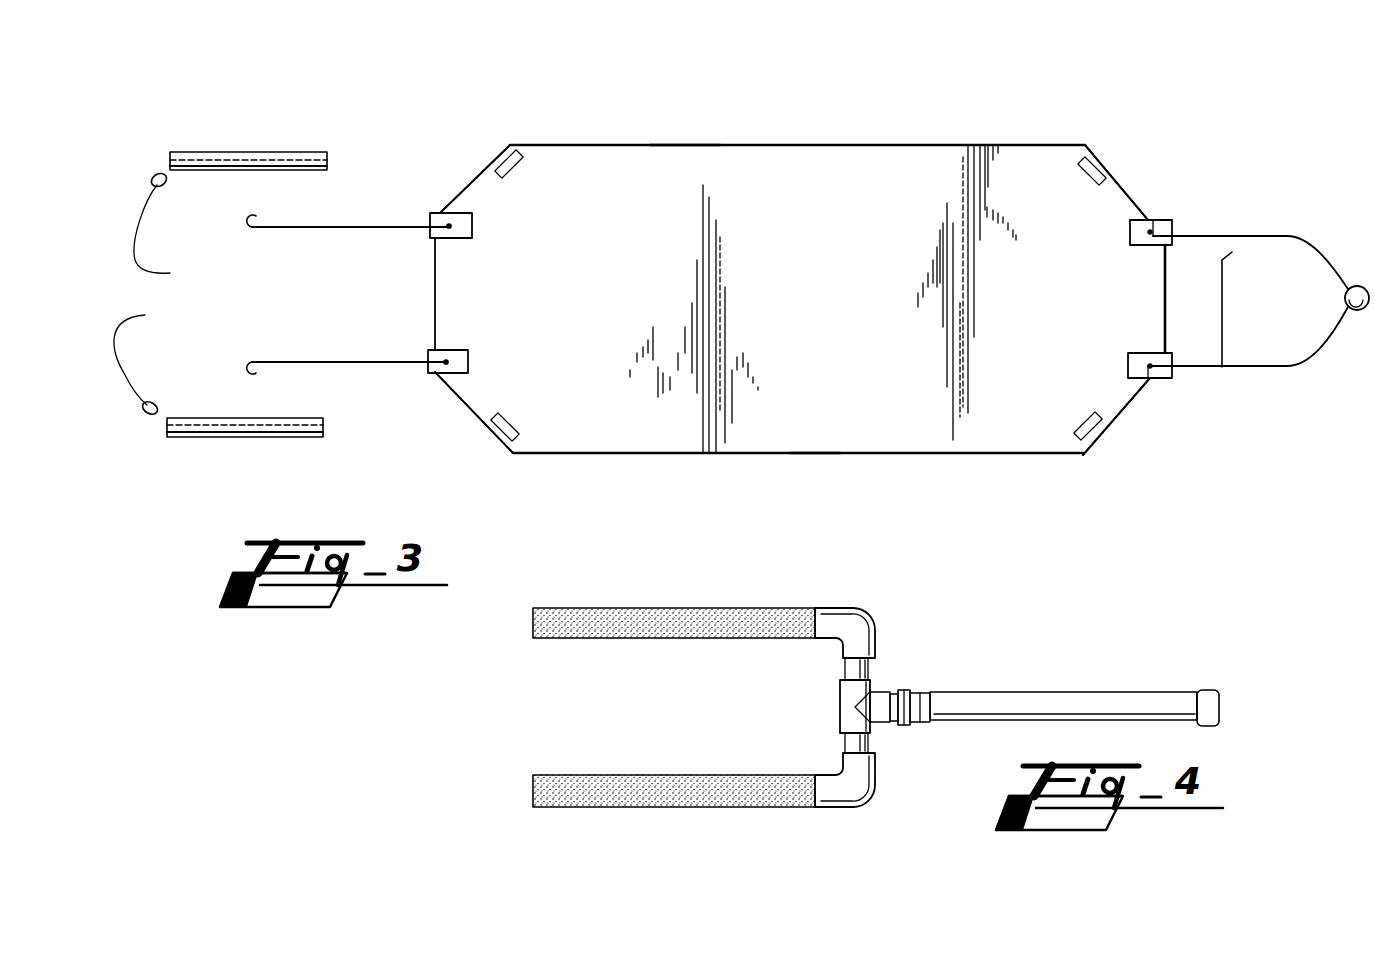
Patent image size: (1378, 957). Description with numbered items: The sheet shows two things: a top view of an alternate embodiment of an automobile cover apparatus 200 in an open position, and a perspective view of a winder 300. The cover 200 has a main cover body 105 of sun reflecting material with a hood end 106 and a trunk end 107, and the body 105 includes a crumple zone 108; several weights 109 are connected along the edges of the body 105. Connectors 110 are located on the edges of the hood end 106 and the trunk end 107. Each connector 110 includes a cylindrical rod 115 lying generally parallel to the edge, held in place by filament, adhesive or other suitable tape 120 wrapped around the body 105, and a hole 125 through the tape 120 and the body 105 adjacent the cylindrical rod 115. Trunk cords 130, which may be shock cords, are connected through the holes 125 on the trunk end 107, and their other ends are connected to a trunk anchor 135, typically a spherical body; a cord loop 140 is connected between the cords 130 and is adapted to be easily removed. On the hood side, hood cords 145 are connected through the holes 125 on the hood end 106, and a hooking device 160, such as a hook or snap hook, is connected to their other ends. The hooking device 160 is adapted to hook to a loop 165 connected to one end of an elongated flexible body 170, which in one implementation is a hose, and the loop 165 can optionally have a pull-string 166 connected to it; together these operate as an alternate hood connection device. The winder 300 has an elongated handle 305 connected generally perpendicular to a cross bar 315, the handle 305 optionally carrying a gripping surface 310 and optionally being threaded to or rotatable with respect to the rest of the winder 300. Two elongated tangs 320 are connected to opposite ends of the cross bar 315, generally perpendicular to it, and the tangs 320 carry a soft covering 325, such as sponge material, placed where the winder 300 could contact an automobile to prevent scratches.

In FIG. 3, the main cover body 105 is at (757, 183).
In FIG. 3, the hood end 106 is at (393, 135).
In FIG. 3, the trunk end 107 is at (1215, 208).
In FIG. 3, the crumple zone 108 is at (657, 163).
In FIG. 3, the weights 109 is at (523, 160).
In FIG. 3, the connectors 110 is at (422, 253).
In FIG. 3, the cylindrical rod 115 is at (437, 213).
In FIG. 3, the tape 120 is at (472, 227).
In FIG. 3, the hole 125 is at (450, 223).
In FIG. 3, the trunk cords 130 is at (1287, 237).
In FIG. 3, the trunk anchor 135 is at (1345, 291).
In FIG. 3, the cord loop 140 is at (1230, 333).
In FIG. 3, the hood cords 145 is at (283, 225).
In FIG. 3, the hooking device 160 is at (243, 215).
In FIG. 3, the loop 165 is at (153, 175).
In FIG. 3, the pull-string 166 is at (143, 205).
In FIG. 3, the elongated flexible body 170 is at (238, 152).
In FIG. 3, the automobile cover apparatus 200 is at (368, 67).
In FIG. 4, the winder 300 is at (387, 710).
In FIG. 4, the elongated handle 305 is at (1097, 707).
In FIG. 4, the gripping surface 310 is at (897, 730).
In FIG. 4, the cross bar 315 is at (870, 668).
In FIG. 4, the tangs 320 is at (503, 618).
In FIG. 4, the soft covering 325 is at (670, 620).